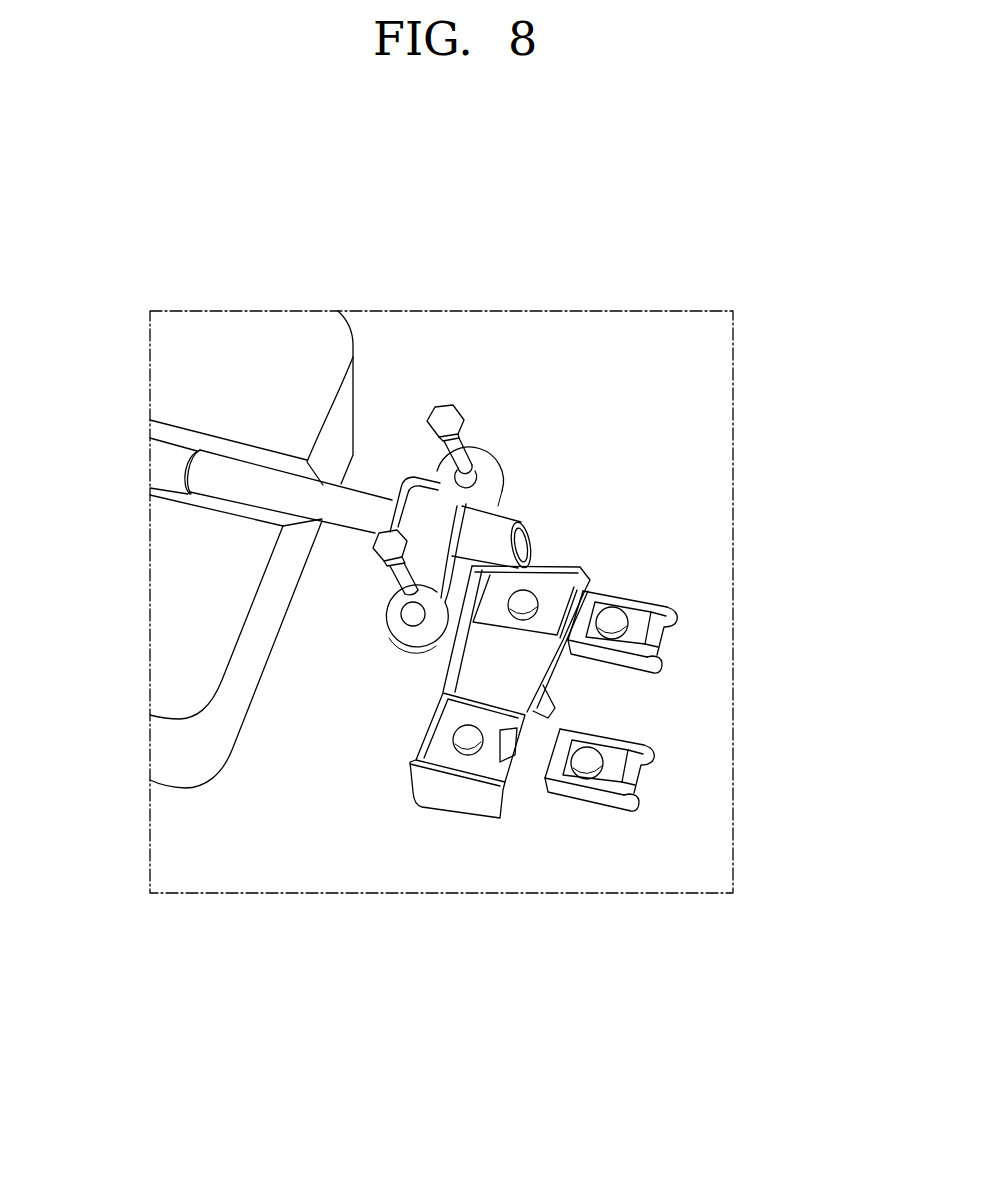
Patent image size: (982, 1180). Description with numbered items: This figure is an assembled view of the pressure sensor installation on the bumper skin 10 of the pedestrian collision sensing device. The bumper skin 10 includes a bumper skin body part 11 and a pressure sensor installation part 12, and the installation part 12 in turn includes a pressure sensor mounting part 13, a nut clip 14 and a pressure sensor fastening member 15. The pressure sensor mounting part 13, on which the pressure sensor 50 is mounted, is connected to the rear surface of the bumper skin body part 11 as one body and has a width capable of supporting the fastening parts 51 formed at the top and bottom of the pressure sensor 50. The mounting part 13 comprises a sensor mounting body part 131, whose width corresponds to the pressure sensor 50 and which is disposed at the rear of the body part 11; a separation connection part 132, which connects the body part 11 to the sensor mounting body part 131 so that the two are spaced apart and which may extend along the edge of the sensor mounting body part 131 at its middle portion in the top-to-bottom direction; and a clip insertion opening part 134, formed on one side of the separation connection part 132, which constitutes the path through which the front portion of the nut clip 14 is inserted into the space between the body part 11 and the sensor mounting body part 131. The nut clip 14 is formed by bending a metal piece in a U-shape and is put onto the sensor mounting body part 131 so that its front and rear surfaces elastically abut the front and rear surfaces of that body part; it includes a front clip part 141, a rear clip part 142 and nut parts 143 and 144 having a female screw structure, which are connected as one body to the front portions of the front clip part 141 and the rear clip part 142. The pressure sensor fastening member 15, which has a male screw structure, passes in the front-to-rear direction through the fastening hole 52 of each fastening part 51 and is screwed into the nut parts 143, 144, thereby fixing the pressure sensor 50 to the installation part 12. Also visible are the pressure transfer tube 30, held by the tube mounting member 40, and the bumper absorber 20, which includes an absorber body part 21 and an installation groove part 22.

The bumper skin 10 is at (684, 899).
The bumper skin body part 11 is at (713, 812).
The pressure sensor installation part 12 is at (441, 767).
The pressure sensor mounting part 13 is at (432, 688).
The sensor mounting body part 131 is at (444, 740).
The separation connection part 132 is at (437, 790).
The clip insertion opening part 134 is at (510, 790).
The nut clip 14 is at (682, 634).
The front clip part 141 is at (640, 647).
The rear clip part 142 is at (640, 613).
The nut part 143 is at (630, 633).
The nut part 144 is at (610, 617).
The pressure sensor fastening member 15 is at (386, 540).
The bumper absorber 20 is at (207, 520).
The absorber body part 21 is at (165, 684).
The installation groove part 22 is at (242, 451).
The pressure transfer tube 30 is at (235, 482).
The tube mounting member 40 is at (165, 458).
The pressure sensor 50 is at (515, 495).
The fastening part 51 is at (495, 470).
The fastening hole 52 is at (485, 447).